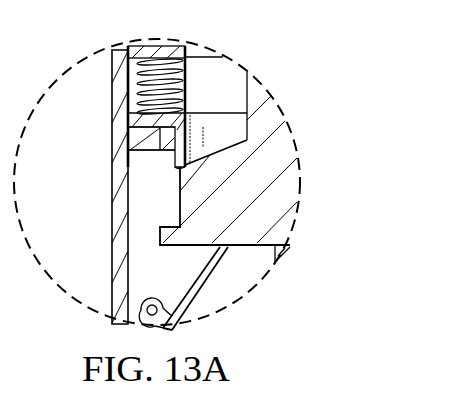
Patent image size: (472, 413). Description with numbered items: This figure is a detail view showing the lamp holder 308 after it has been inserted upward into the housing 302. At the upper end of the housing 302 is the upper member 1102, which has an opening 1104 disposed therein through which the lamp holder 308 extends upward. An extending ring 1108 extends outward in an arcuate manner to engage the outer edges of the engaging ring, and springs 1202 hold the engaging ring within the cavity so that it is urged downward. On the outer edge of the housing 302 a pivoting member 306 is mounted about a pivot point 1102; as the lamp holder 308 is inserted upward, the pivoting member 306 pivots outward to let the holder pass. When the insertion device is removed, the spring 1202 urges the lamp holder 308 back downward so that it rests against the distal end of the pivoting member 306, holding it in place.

The housing 302 is at (111, 208).
The pivoting member 306 is at (192, 299).
The lamp holder 308 is at (302, 168).
The upper member 1102 is at (147, 45).
The opening 1104 is at (212, 130).
The extending ring 1108 is at (147, 151).
The spring 1202 is at (128, 93).